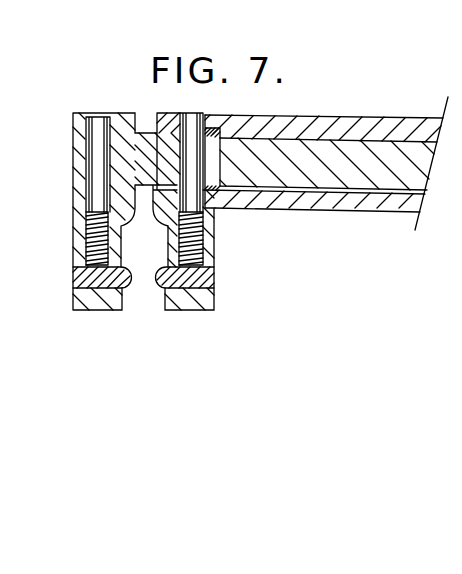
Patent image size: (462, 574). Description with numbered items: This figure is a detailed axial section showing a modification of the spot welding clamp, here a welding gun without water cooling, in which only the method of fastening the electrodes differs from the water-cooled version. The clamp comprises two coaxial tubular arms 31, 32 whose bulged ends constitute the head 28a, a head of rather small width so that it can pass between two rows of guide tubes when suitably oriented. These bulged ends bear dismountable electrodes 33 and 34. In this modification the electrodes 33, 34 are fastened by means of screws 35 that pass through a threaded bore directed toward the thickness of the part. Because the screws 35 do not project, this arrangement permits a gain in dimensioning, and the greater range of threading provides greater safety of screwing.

The tubular arm 31 is at (355, 122).
The tubular arm 32 is at (337, 180).
The head 28a is at (232, 224).
The electrode 33 is at (172, 282).
The electrode 34 is at (120, 280).
The screw 35 is at (85, 248).